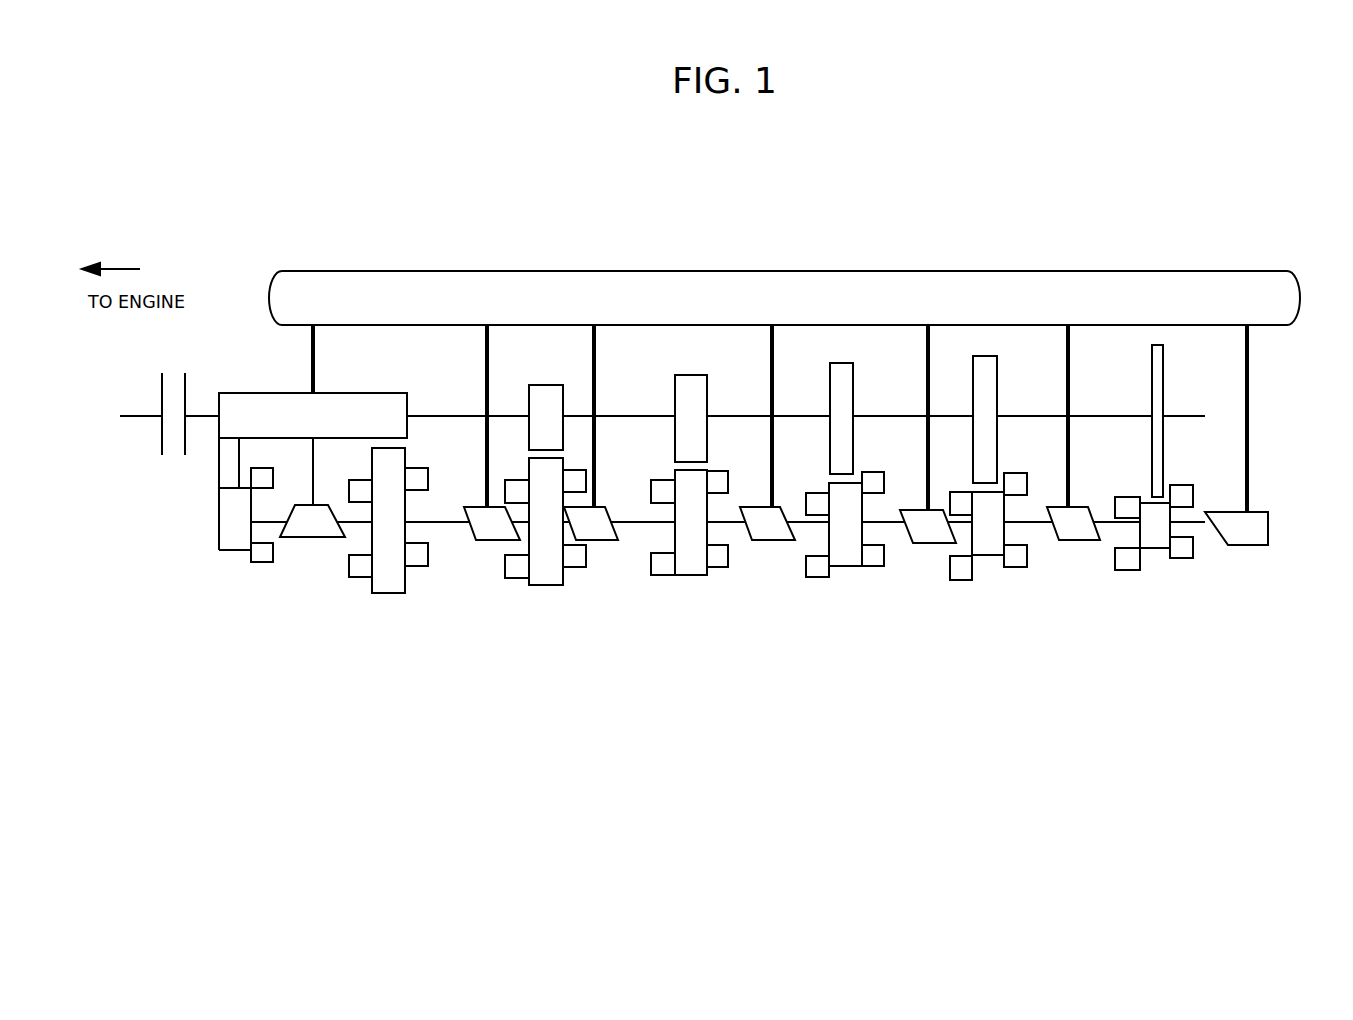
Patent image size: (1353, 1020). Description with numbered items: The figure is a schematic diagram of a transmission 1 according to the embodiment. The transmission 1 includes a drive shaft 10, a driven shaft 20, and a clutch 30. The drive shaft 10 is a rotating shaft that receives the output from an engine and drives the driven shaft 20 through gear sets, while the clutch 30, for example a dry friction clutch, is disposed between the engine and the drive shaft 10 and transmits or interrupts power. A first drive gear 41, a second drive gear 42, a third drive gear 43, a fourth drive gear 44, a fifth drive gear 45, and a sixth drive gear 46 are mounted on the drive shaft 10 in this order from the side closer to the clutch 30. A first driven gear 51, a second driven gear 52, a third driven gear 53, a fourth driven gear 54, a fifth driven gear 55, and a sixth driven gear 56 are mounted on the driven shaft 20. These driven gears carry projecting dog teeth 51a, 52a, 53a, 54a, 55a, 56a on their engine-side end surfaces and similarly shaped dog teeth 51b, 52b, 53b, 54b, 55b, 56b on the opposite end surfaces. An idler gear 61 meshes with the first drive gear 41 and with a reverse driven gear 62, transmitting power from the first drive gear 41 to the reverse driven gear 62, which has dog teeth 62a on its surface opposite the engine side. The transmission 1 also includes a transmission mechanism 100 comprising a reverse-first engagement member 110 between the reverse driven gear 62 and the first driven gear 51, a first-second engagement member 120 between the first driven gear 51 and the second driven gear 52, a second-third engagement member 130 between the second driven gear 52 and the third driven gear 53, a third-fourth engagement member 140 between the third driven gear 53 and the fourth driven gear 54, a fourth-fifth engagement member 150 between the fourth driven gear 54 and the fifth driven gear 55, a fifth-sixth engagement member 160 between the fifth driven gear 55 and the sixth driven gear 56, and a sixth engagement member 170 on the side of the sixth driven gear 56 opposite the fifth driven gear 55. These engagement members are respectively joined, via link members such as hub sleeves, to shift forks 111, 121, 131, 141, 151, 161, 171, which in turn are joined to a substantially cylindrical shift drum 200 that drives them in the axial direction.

The transmission 1 is at (118, 504).
The drive shaft 10 is at (1183, 416).
The driven shaft 20 is at (1195, 523).
The clutch 30 is at (162, 392).
The first drive gear 41 is at (293, 393).
The second drive gear 42 is at (536, 385).
The third drive gear 43 is at (678, 375).
The fourth drive gear 44 is at (830, 387).
The fifth drive gear 45 is at (973, 380).
The sixth drive gear 46 is at (1152, 373).
The first driven gear 51 is at (383, 593).
The dog teeth 51a is at (358, 575).
The dog teeth 51b is at (413, 565).
The second driven gear 52 is at (538, 585).
The dog teeth 52a is at (515, 576).
The dog teeth 52b is at (572, 565).
The third driven gear 53 is at (685, 575).
The dog teeth 53a is at (658, 575).
The dog teeth 53b is at (713, 566).
The fourth driven gear 54 is at (848, 566).
The dog teeth 54a is at (815, 575).
The dog teeth 54b is at (875, 566).
The fifth driven gear 55 is at (991, 555).
The dog teeth 55a is at (958, 577).
The dog teeth 55b is at (1018, 567).
The sixth driven gear 56 is at (1155, 548).
The dog teeth 56a is at (1125, 570).
The dog teeth 56b is at (1182, 558).
The idler gear 61 is at (219, 473).
The reverse driven gear 62 is at (219, 527).
The dog teeth 62a is at (250, 562).
The transmission mechanism 100 is at (1134, 760).
The reverse-first engagement member 110 is at (309, 537).
The shift fork 111 is at (313, 360).
The first-second engagement member 120 is at (489, 540).
The shift fork 121 is at (487, 373).
The second-third engagement member 130 is at (604, 540).
The shift fork 131 is at (594, 373).
The third-fourth engagement member 140 is at (772, 540).
The shift fork 141 is at (772, 373).
The fourth-fifth engagement member 150 is at (933, 543).
The shift fork 151 is at (928, 384).
The fifth-sixth engagement member 160 is at (1078, 540).
The shift fork 161 is at (1068, 384).
The sixth engagement member 170 is at (1268, 512).
The shift fork 171 is at (1247, 438).
The shift drum 200 is at (1300, 311).